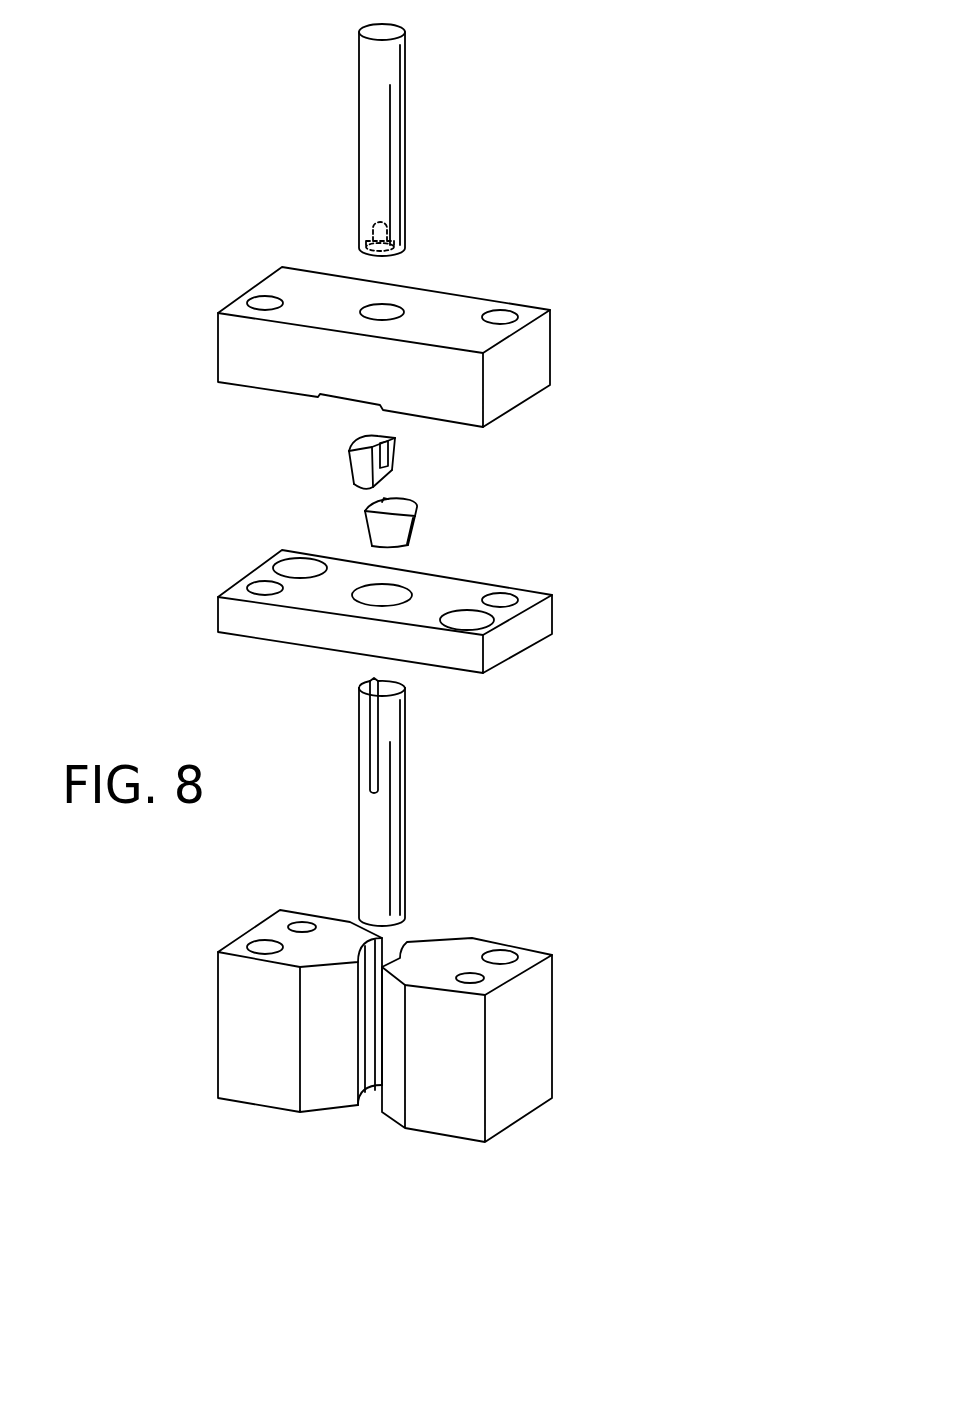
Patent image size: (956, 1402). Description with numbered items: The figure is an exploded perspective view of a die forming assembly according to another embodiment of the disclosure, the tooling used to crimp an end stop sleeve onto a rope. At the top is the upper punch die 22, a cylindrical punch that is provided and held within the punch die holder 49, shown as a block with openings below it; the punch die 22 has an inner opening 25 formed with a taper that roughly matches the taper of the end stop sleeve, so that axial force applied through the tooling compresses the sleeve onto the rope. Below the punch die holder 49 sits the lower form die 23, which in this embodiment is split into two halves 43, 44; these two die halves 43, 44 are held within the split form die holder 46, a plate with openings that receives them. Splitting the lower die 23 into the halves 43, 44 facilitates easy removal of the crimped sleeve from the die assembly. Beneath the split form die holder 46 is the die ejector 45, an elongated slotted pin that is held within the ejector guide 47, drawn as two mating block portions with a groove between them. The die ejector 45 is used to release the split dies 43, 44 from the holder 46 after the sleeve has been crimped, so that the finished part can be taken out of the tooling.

The upper punch die 22 is at (403, 112).
The inner opening 25 is at (370, 233).
The punch die holder 49 is at (553, 345).
The lower form die 23 is at (373, 500).
The die half 43 is at (397, 457).
The die half 44 is at (413, 528).
The split form die holder 46 is at (536, 648).
The die ejector 45 is at (405, 832).
The ejector guide 47 is at (278, 1110).